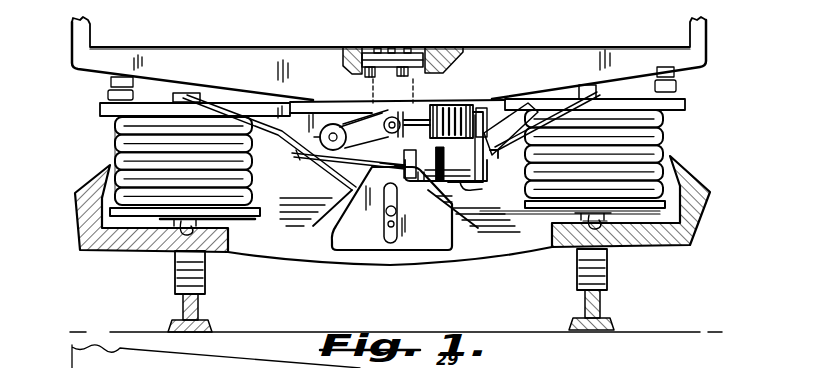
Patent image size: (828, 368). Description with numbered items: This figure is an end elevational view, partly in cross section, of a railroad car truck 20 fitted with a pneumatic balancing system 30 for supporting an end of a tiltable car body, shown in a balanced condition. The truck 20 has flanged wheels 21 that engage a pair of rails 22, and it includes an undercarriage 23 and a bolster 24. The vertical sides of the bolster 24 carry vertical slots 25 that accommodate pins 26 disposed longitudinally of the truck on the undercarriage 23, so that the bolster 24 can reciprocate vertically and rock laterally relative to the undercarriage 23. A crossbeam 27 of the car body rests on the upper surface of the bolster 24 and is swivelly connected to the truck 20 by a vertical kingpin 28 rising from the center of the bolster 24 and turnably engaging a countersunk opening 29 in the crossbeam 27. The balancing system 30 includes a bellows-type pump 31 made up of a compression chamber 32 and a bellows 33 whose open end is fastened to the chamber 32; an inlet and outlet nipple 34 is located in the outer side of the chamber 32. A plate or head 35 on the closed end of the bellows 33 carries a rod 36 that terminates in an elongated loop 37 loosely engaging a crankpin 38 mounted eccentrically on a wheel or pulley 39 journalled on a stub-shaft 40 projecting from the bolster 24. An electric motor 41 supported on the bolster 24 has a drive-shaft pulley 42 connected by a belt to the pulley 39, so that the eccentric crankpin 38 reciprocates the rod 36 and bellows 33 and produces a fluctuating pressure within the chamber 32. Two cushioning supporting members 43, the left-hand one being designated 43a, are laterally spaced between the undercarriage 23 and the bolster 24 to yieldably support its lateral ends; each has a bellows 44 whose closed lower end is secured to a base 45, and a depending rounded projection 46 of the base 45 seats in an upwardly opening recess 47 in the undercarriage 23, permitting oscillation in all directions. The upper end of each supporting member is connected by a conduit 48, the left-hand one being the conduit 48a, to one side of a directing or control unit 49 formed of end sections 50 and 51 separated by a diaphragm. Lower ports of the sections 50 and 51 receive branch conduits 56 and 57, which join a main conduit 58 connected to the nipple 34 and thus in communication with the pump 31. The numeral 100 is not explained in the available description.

The truck 20 is at (715, 210).
The flanged wheels 21 is at (206, 278).
The rails 22 is at (200, 322).
The undercarriage 23 is at (481, 253).
The bolster 24 is at (350, 253).
The vertical slots 25 is at (385, 226).
The pins 26 is at (398, 212).
The car body crossbeam 27 is at (541, 47).
The kingpin 28 is at (366, 75).
The countersunk opening 29 is at (371, 47).
The pneumatic balancing system 30 is at (446, 103).
The bellows-type pump 31 is at (489, 108).
The compression chamber 32 is at (469, 107).
The bellows 33 is at (413, 103).
The inlet and outlet nipple 34 is at (503, 130).
The plate or head 35 is at (414, 120).
The rod 36 is at (373, 103).
The elongated loop 37 is at (401, 144).
The crankpin 38 is at (380, 112).
The wheel or pulley 39 is at (367, 146).
The stub-shaft 40 is at (383, 126).
The electric motor 41 is at (333, 127).
The motor pulley 42 is at (320, 137).
The cushioning supporting members 43 is at (672, 140).
The left-hand supporting member 43a is at (112, 143).
The supporting bellows 44 is at (246, 156).
The base 45 is at (557, 207).
The rounded projection 46 is at (180, 233).
The recess 47 is at (620, 227).
The conduit 48 is at (499, 158).
The left-hand conduit 48a is at (300, 158).
The directing or control unit 49 is at (393, 165).
The end section 50 is at (447, 168).
The end section 51 is at (418, 182).
The branch conduit 56 is at (476, 182).
The branch conduit 57 is at (384, 181).
The main conduit 58 is at (490, 178).
The tie rod 100 is at (190, 96).